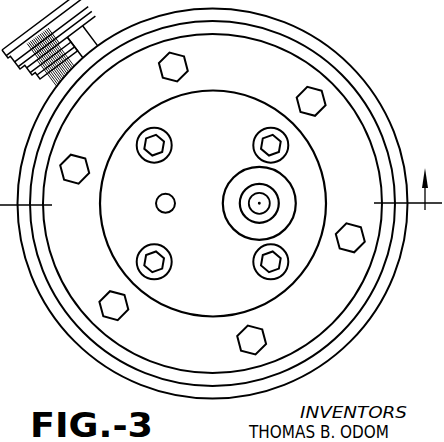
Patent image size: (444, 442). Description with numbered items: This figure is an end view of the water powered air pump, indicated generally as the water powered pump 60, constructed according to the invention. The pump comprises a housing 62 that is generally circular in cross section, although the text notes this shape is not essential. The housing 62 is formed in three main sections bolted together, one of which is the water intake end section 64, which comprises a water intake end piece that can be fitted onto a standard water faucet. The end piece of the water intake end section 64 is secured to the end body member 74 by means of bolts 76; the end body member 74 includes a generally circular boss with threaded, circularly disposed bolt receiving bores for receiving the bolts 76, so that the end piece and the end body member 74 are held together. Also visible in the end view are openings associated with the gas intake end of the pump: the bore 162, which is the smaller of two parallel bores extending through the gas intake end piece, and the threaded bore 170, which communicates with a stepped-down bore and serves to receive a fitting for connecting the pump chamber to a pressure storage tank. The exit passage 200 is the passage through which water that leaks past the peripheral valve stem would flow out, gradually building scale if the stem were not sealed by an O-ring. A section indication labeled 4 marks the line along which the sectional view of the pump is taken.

The water powered pump 60 is at (338, 41).
The housing 62 is at (393, 125).
The water intake end section 64 is at (181, 346).
The end body member 74 is at (304, 31).
The bolts 76 is at (326, 97).
The bore 162 is at (169, 201).
The threaded bore 170 is at (277, 192).
The exit passage 200 is at (86, 31).
The section line 4 is at (221, 182).